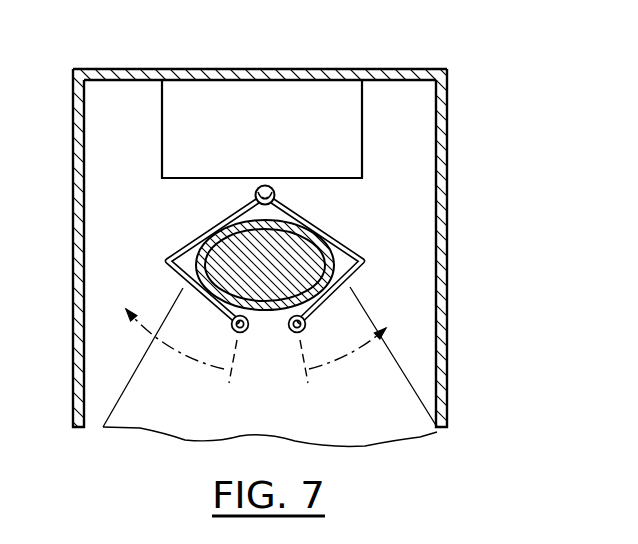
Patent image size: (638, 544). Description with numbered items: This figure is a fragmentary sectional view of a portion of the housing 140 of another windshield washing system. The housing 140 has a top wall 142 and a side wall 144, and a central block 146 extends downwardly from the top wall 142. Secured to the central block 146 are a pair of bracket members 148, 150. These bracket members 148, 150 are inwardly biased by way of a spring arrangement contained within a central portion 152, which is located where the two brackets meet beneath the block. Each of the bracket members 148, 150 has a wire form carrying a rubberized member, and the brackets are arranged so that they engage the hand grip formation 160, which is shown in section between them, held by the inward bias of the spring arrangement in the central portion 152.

The housing 140 is at (319, 272).
The top wall 142 is at (381, 68).
The side wall 144 is at (447, 343).
The central block 146 is at (228, 98).
The bracket member 148 is at (198, 229).
The bracket member 150 is at (338, 228).
The central portion 152 is at (266, 186).
The hand grip formation 160 is at (270, 316).